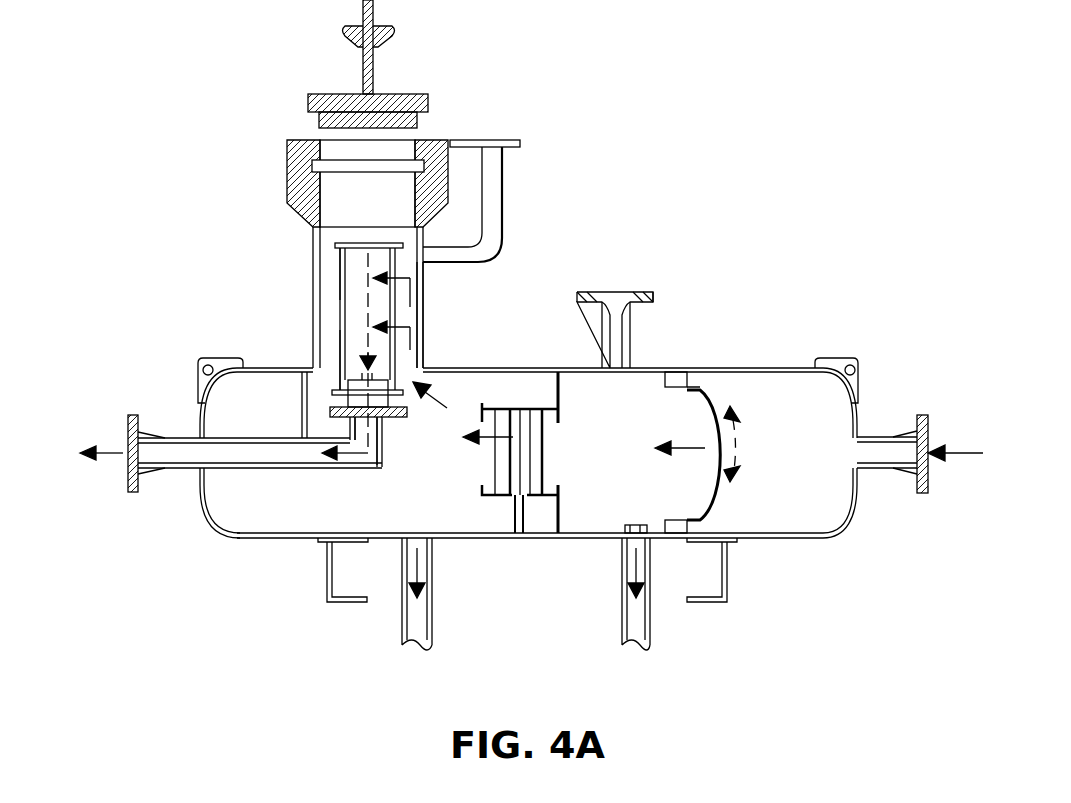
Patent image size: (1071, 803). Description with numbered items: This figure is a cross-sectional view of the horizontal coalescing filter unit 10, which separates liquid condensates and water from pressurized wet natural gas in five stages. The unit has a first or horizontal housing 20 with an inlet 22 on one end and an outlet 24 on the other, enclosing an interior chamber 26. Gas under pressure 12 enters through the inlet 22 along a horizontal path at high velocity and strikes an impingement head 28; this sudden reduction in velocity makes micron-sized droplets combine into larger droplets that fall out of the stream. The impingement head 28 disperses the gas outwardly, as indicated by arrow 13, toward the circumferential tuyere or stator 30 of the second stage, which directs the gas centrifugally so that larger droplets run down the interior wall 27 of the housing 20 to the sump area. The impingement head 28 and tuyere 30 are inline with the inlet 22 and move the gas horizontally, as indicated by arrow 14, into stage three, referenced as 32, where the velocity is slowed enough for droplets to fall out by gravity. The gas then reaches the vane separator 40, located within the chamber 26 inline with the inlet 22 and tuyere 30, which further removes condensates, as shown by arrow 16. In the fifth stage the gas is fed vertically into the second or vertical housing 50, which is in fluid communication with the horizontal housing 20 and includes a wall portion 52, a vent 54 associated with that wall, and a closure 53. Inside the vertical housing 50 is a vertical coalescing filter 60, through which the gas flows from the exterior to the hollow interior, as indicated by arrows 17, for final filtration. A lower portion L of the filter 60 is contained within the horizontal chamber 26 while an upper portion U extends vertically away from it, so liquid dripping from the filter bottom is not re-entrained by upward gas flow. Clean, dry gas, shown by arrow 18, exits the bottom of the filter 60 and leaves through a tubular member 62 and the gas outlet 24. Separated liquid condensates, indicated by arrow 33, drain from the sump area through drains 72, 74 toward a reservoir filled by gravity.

The horizontal coalescing filter unit 10 is at (220, 150).
The gas under pressure 12 is at (968, 450).
The outward dispersal direction 13 is at (736, 430).
The horizontal gas flow 14 is at (685, 446).
The gas flow from vane separator 16 is at (482, 437).
The filter flow arrows 17 is at (415, 288).
The clean dry gas 18 is at (105, 450).
The horizontal housing 20 is at (745, 368).
The inlet 22 is at (928, 425).
The outlet 24 is at (133, 415).
The interior chamber 26 is at (403, 504).
The interior wall 27 is at (692, 530).
The impingement head 28 is at (720, 490).
The tuyere 30 is at (678, 372).
The stage 3 32 is at (590, 513).
The separated liquid flow 33 is at (420, 566).
The vane separator 40 is at (537, 408).
The vertical housing 50 is at (423, 310).
The wall portion 52 is at (423, 326).
The closure 53 is at (328, 93).
The vent 54 is at (500, 147).
The vertical coalescing filter 60 is at (360, 292).
The tubular member 62 is at (384, 446).
The drain 72 is at (432, 597).
The drain 74 is at (622, 590).
The upper portion U is at (340, 263).
The lower portion L is at (334, 343).